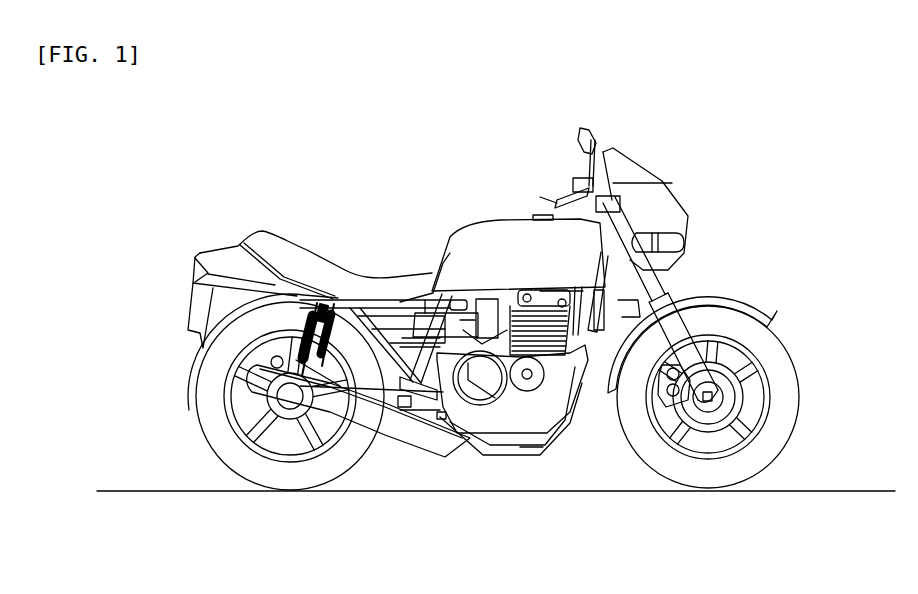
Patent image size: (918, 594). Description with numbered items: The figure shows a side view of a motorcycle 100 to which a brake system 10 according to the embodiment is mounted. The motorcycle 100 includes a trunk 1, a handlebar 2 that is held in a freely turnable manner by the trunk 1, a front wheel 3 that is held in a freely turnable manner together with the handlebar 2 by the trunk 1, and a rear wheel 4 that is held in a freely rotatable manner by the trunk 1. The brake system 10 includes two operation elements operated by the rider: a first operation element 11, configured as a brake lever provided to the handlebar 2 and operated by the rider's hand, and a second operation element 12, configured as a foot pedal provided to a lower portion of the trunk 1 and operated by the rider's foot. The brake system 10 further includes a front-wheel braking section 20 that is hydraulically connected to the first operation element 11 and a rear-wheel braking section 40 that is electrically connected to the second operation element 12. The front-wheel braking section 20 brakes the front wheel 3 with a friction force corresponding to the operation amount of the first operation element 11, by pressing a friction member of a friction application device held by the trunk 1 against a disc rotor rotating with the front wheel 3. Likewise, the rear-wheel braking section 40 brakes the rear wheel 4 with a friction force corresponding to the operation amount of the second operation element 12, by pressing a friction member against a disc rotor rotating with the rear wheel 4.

The motorcycle 100 is at (778, 89).
The brake system 10 is at (392, 183).
The trunk 1 is at (508, 250).
The handlebar 2 is at (560, 205).
The first operation element 11 is at (612, 198).
The front-wheel braking section 20 is at (690, 275).
The front wheel 3 is at (792, 334).
The rear wheel 4 is at (189, 374).
The rear-wheel braking section 40 is at (386, 445).
The second operation element 12 is at (446, 421).